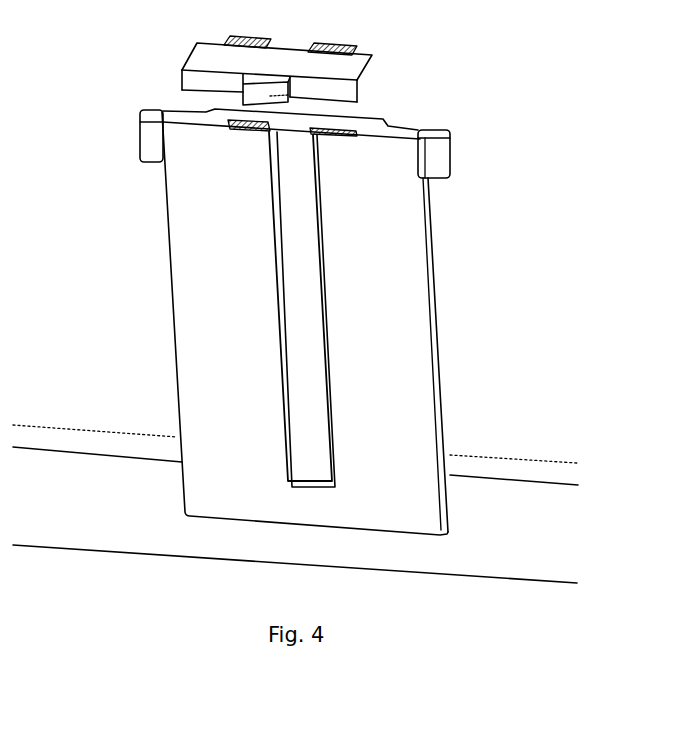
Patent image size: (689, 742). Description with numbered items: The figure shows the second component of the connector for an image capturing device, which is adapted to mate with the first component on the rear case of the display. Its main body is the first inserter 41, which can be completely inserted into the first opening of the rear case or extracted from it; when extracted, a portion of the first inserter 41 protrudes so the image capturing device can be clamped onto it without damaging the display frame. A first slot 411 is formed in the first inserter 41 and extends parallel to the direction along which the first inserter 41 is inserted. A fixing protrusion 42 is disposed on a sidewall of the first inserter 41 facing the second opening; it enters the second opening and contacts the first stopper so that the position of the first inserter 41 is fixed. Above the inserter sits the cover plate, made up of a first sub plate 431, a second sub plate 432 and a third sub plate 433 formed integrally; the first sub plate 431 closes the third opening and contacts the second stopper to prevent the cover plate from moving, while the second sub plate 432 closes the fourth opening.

The first inserter 41 is at (183, 263).
The first slot 411 is at (303, 358).
The fixing protrusion 42 is at (150, 150).
The first sub plate 431 is at (357, 93).
The second sub plate 432 is at (208, 55).
The third sub plate 433 is at (357, 47).